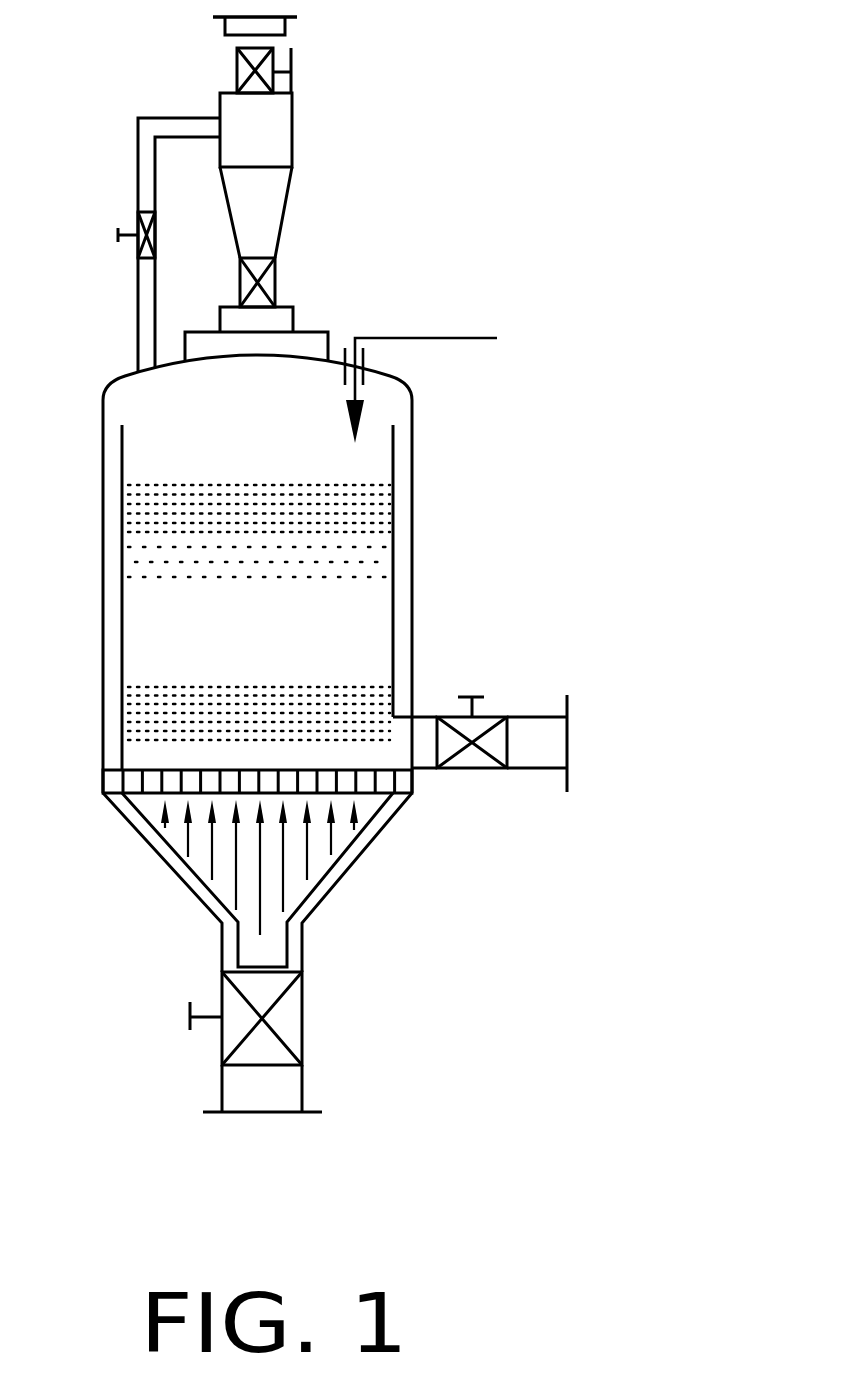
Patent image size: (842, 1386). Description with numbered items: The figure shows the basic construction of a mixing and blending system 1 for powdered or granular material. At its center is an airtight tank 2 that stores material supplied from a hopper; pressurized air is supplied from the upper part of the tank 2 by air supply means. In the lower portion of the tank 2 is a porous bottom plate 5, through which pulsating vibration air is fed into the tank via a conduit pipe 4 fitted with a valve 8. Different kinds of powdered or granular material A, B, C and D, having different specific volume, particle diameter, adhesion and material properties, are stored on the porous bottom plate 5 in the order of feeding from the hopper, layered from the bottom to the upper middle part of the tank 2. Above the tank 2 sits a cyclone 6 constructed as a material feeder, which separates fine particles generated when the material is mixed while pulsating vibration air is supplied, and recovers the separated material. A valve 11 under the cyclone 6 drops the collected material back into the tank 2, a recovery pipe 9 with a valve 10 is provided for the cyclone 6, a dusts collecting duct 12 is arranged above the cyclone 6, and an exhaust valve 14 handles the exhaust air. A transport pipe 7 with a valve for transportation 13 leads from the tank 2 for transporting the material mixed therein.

The mixing and blending system 1 is at (453, 443).
The airtight tank 2 is at (414, 550).
The conduit pipe 4 is at (303, 1085).
The porous bottom plate 5 is at (365, 783).
The cyclone 6 is at (292, 135).
The transport pipe 7 is at (535, 768).
The valve 8 is at (302, 1015).
The recovery pipe 9 is at (137, 312).
The valve 10 is at (153, 235).
The valve 11 is at (275, 283).
The dusts collecting duct 12 is at (285, 28).
The valve for transportation 13 is at (490, 723).
The exhaust valve 14 is at (292, 65).
The powdered or granular material A is at (150, 720).
The powdered or granular material B is at (150, 626).
The powdered or granular material C is at (150, 561).
The powdered or granular material D is at (150, 503).